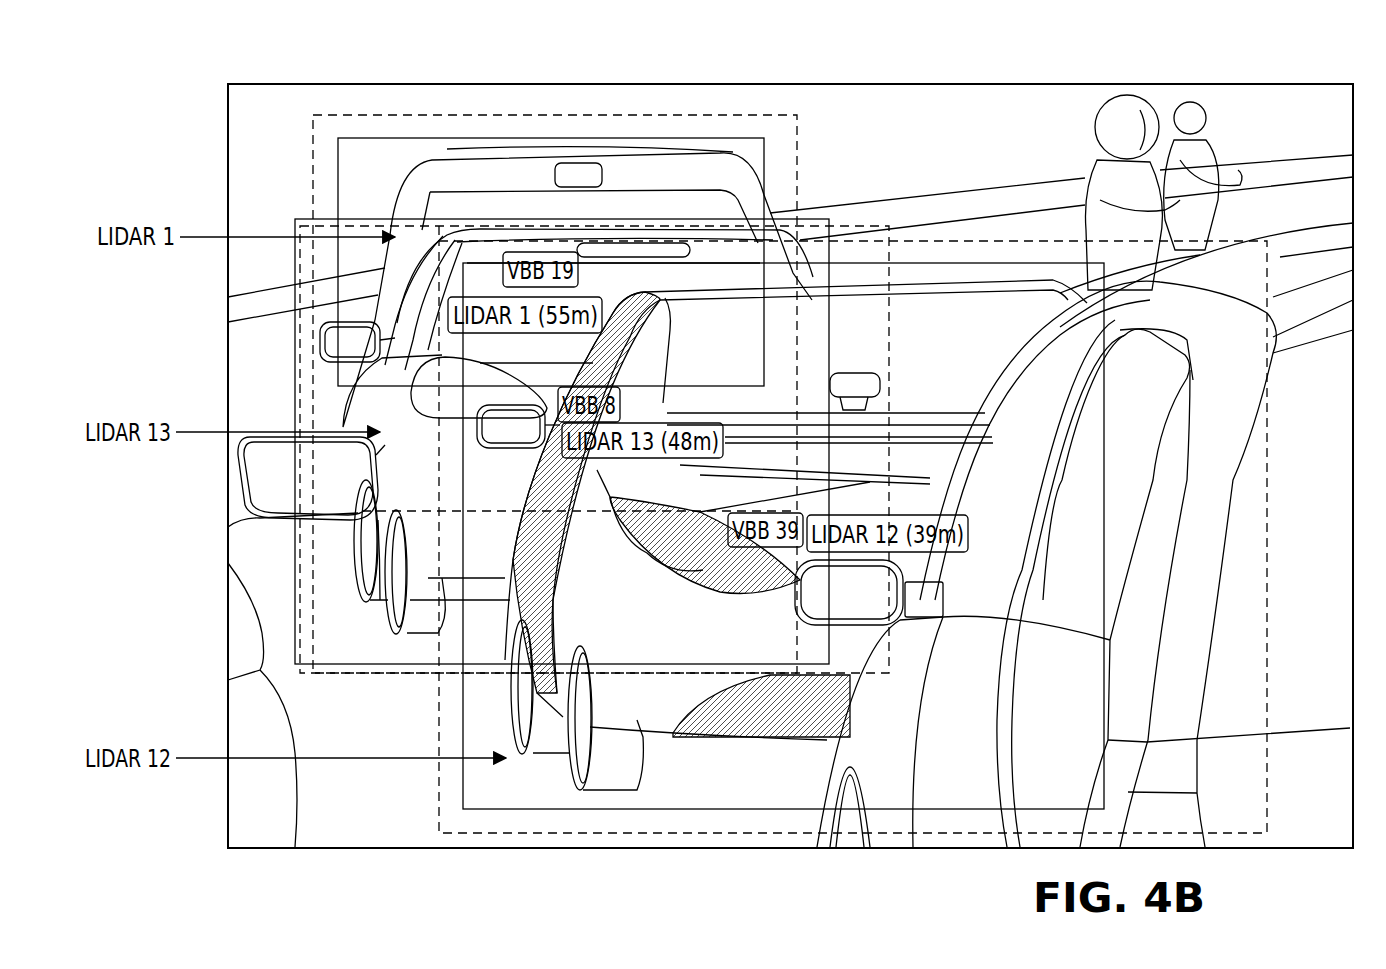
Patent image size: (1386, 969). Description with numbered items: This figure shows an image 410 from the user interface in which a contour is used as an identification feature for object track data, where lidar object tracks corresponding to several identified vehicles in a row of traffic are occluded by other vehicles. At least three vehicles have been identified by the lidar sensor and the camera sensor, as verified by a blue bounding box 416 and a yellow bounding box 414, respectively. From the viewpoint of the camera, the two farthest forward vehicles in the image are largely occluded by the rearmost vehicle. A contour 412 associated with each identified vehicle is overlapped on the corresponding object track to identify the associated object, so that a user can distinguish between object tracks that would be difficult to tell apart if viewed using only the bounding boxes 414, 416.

The sensor data visualization frame 410 is at (303, 50).
The contour 412 is at (519, 790).
The yellow bounding box 414 is at (555, 136).
The blue bounding box 416 is at (735, 114).